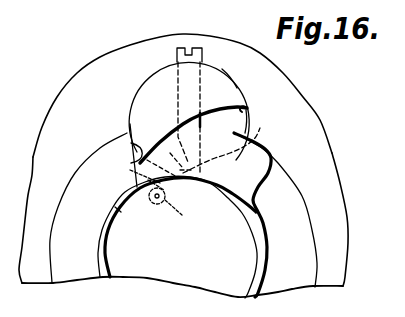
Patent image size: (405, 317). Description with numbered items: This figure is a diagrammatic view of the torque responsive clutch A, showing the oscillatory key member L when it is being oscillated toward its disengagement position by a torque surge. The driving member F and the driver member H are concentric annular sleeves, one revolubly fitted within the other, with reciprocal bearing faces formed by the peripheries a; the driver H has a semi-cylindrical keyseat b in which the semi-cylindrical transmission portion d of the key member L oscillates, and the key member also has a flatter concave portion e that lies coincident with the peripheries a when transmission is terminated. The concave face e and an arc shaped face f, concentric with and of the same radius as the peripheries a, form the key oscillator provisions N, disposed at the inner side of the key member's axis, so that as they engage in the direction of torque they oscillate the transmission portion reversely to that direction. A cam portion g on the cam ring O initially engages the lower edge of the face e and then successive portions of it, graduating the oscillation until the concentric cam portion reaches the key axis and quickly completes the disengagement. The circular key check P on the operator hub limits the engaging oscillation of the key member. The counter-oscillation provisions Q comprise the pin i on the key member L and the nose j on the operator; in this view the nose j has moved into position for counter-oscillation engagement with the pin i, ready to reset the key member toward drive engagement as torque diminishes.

The torque responsive clutch A is at (175, 158).
The driver member H is at (294, 211).
The key check P is at (182, 272).
The driving member F is at (194, 237).
The cam ring O is at (253, 202).
The transmission portion d is at (130, 98).
The pin i is at (193, 136).
The arc shaped face f is at (243, 155).
The concave portion e is at (241, 110).
The oscillatory key member L is at (233, 87).
The keyseat b is at (247, 123).
The key oscillator provisions N is at (126, 157).
The cam portion g is at (133, 177).
The counter-oscillation provisions Q is at (173, 157).
The nose j is at (182, 183).
The periphery a is at (58, 226).